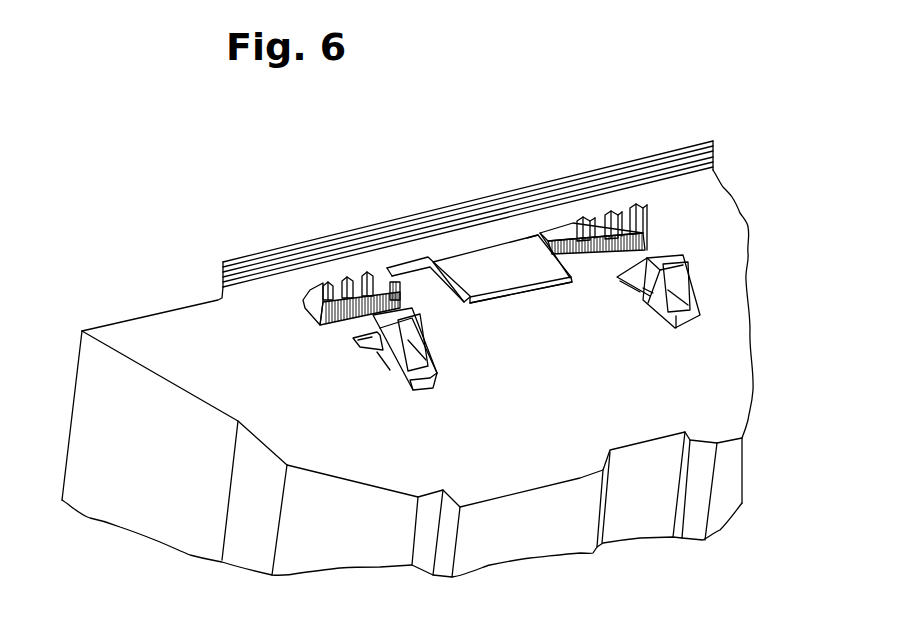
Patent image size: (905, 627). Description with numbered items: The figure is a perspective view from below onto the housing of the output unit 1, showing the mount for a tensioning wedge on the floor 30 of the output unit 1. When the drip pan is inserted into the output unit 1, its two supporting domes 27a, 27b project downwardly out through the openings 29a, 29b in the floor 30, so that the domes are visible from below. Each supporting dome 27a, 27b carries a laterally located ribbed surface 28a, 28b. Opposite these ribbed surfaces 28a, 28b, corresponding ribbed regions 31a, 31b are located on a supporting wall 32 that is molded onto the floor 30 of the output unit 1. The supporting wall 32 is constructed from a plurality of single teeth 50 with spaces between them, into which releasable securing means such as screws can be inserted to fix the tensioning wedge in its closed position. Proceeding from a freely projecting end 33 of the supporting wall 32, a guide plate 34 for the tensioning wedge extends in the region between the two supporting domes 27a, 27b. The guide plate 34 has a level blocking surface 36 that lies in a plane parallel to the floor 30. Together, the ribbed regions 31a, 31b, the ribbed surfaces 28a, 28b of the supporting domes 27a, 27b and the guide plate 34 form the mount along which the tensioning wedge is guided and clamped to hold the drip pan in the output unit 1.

The output unit 1 is at (70, 320).
The floor 30 is at (172, 342).
The single teeth 50 is at (370, 273).
The supporting wall 32 is at (413, 264).
The blocking surface 36 is at (486, 262).
The freely projecting end 33 is at (527, 232).
The guide plate 34 is at (520, 292).
The ribbed region 31a is at (335, 324).
The ribbed region 31b is at (648, 236).
The ribbed surface 28a is at (360, 345).
The ribbed surface 28b is at (673, 252).
The opening 29a is at (358, 334).
The opening 29b is at (620, 283).
The supporting dome 27a is at (381, 375).
The supporting dome 27b is at (644, 320).